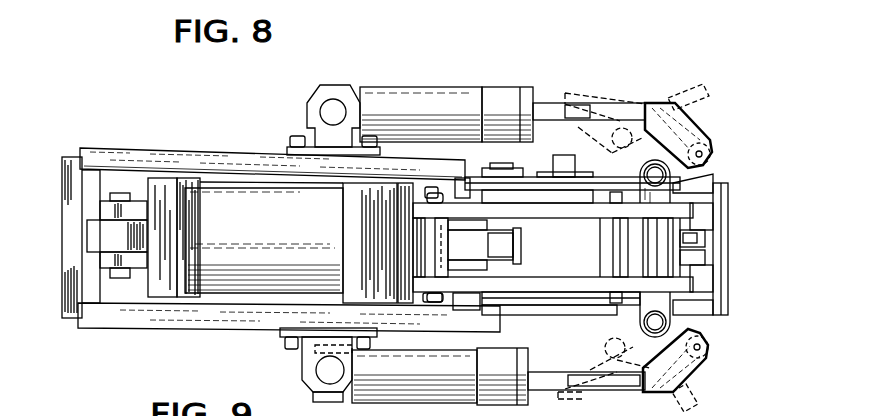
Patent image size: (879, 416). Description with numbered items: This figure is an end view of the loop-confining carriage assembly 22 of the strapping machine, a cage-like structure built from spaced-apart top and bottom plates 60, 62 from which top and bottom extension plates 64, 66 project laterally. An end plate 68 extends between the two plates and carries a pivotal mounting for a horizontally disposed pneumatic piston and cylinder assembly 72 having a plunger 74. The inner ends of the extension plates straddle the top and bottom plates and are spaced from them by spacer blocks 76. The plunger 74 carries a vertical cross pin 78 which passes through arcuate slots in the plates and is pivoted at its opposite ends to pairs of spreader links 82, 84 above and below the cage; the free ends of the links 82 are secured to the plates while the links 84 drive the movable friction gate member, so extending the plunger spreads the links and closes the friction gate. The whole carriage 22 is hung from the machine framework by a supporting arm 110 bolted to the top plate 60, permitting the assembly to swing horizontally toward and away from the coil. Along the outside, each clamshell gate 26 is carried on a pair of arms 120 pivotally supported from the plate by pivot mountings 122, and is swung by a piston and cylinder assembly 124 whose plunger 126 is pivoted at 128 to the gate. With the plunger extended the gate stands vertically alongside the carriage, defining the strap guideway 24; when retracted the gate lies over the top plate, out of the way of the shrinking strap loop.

The carriage assembly 22 is at (91, 137).
The guideway 24 is at (715, 293).
The clamshell type gates 26 is at (728, 232).
The top plate 60 is at (588, 213).
The bottom plate 62 is at (533, 283).
The top extension plate 64 is at (213, 163).
The bottom extension plate 66 is at (120, 309).
The end plate 68 is at (62, 212).
The pneumatic piston and cylinder assembly 72 is at (105, 236).
The plunger 74 is at (502, 243).
The spacer blocks 76 is at (470, 197).
The cross pin 78 is at (496, 257).
The spreader links 82 is at (550, 305).
The spreader links 84 is at (590, 302).
The supporting arm 110 is at (562, 167).
The arms 120 is at (695, 178).
The pivot mountings 122 is at (697, 197).
The piston and cylinder assembly 124 is at (434, 112).
The plunger 126 is at (622, 117).
The pivot 128 is at (711, 143).